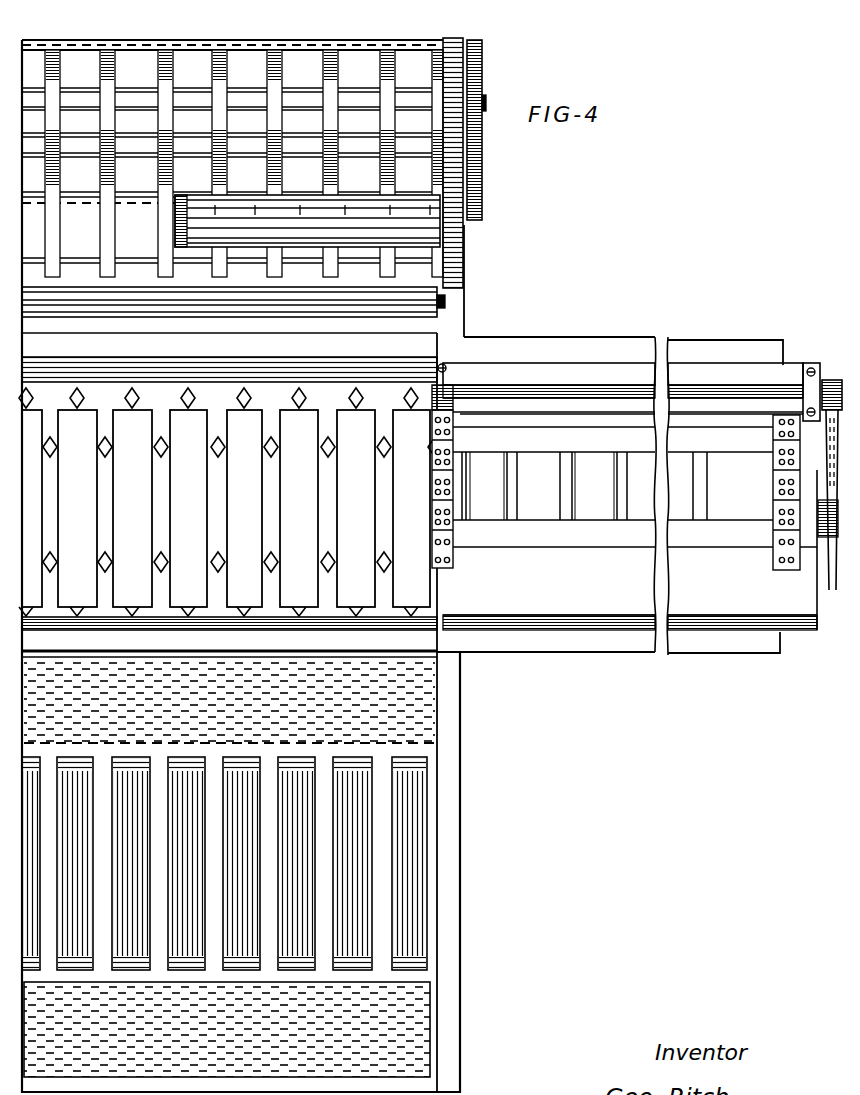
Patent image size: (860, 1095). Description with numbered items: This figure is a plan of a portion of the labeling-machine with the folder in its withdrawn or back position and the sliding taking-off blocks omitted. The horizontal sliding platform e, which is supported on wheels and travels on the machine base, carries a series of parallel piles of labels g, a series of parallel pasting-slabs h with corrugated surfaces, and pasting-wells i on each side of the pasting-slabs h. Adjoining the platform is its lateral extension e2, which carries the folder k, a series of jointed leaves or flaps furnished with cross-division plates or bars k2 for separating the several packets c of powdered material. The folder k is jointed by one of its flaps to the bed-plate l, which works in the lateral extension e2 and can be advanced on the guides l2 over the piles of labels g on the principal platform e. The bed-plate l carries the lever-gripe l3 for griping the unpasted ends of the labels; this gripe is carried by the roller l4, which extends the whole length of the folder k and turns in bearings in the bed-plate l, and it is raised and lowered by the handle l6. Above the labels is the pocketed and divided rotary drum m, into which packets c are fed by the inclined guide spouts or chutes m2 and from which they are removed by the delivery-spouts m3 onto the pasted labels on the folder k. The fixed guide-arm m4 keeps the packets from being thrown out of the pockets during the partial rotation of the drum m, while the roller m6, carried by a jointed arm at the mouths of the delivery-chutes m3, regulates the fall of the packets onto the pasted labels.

The pocketed and divided rotary drum m is at (244, 163).
The inclined guide spouts or chutes m2 is at (231, 36).
The delivery-spouts m3 is at (98, 223).
The fixed guide-arm m4 is at (307, 221).
The roller m6 is at (345, 312).
The horizontal sliding platform e is at (217, 1092).
The lateral extension of the platform e2 is at (621, 484).
The guides l2 is at (229, 493).
The bed-plate l is at (631, 495).
The lever-gripe l3 is at (623, 412).
The roller l4 is at (623, 401).
The handle l6 is at (830, 485).
The folder k is at (608, 486).
The cross-division plates or bars k2 is at (597, 486).
The packets c is at (542, 486).
The piles of labels g is at (230, 502).
The pasting-wells i is at (229, 867).
The pasting-slabs h is at (224, 863).